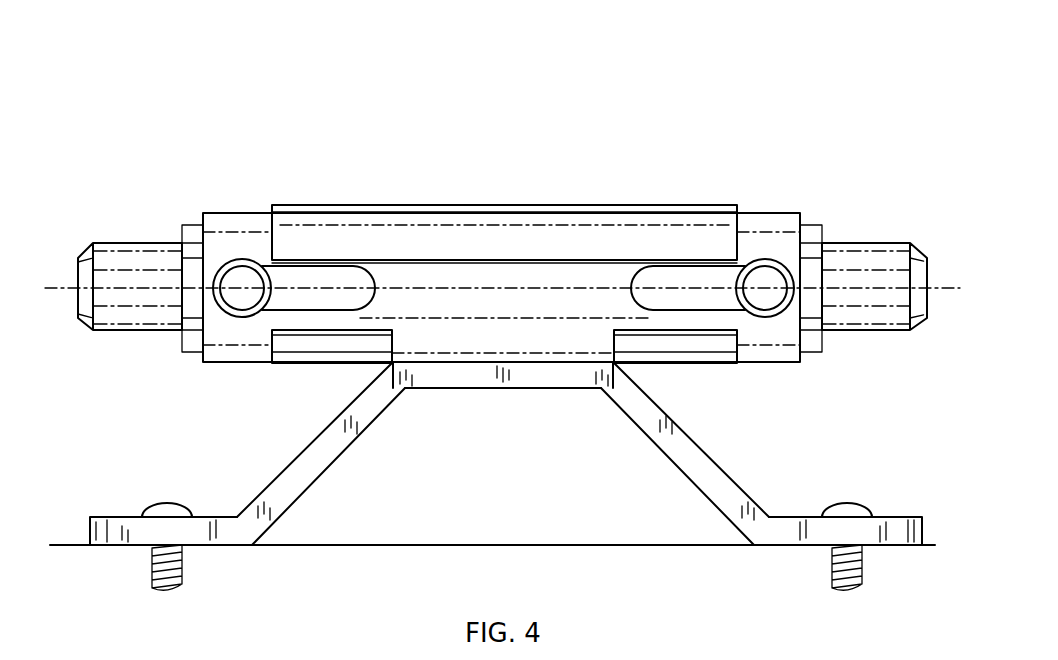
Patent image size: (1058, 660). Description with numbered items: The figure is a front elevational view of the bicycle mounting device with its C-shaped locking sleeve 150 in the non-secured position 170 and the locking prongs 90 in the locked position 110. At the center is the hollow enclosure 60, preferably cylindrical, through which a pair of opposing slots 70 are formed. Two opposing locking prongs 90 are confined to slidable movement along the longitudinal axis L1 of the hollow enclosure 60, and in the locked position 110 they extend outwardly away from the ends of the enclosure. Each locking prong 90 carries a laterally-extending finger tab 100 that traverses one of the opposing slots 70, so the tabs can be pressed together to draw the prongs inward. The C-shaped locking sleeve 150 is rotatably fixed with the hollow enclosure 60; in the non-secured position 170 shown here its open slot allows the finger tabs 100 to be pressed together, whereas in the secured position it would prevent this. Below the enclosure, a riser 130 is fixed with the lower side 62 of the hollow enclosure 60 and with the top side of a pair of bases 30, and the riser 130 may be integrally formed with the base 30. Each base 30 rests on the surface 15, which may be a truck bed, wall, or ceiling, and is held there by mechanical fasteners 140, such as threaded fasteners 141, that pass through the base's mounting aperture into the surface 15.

The locked position 110 is at (197, 150).
The hollow enclosure 60 is at (223, 213).
The lower side of the hollow enclosure 62 is at (444, 352).
The opposing slots 70 is at (343, 308).
The locking prong 90 is at (145, 242).
The finger tab 100 is at (238, 280).
The C-shaped locking sleeve 150 is at (445, 205).
The non-secured position 170 is at (626, 130).
The longitudinal axis L1 is at (947, 288).
The riser 130 is at (362, 392).
The surface 15 is at (690, 440).
The base 30 is at (88, 535).
The mechanical fastener 140 is at (190, 515).
The threaded fastener 141 is at (507, 567).